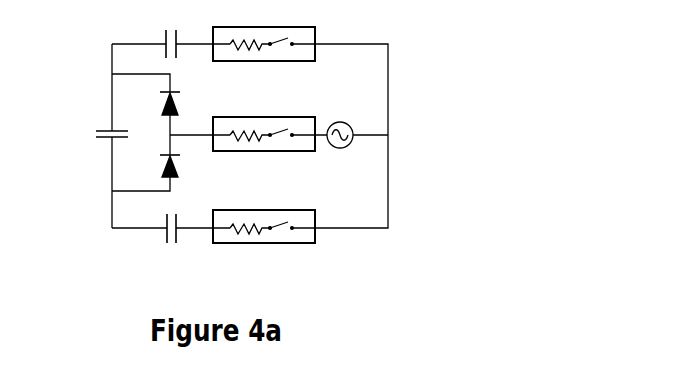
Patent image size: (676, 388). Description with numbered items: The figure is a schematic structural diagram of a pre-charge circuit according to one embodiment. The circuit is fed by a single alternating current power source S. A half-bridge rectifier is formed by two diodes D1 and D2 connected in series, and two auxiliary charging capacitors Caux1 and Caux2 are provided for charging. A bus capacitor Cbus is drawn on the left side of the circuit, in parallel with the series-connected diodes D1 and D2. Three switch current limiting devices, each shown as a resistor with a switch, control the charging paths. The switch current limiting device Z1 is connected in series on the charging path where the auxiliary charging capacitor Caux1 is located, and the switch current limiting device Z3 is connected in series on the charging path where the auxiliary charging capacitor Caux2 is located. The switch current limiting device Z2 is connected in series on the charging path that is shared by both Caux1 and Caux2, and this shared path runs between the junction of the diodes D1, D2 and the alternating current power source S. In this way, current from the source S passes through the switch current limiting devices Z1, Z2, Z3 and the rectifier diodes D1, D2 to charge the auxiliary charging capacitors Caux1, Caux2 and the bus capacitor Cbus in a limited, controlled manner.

The auxiliary charging capacitor Caux1 is at (151, 41).
The bus capacitor Cbus is at (96, 127).
The diode D1 is at (158, 104).
The diode D2 is at (156, 166).
The auxiliary charging capacitor Caux2 is at (147, 230).
The switch current limiting device Z1 is at (264, 56).
The switch current limiting device Z2 is at (264, 146).
The switch current limiting device Z3 is at (264, 238).
The alternating current power source S is at (347, 130).